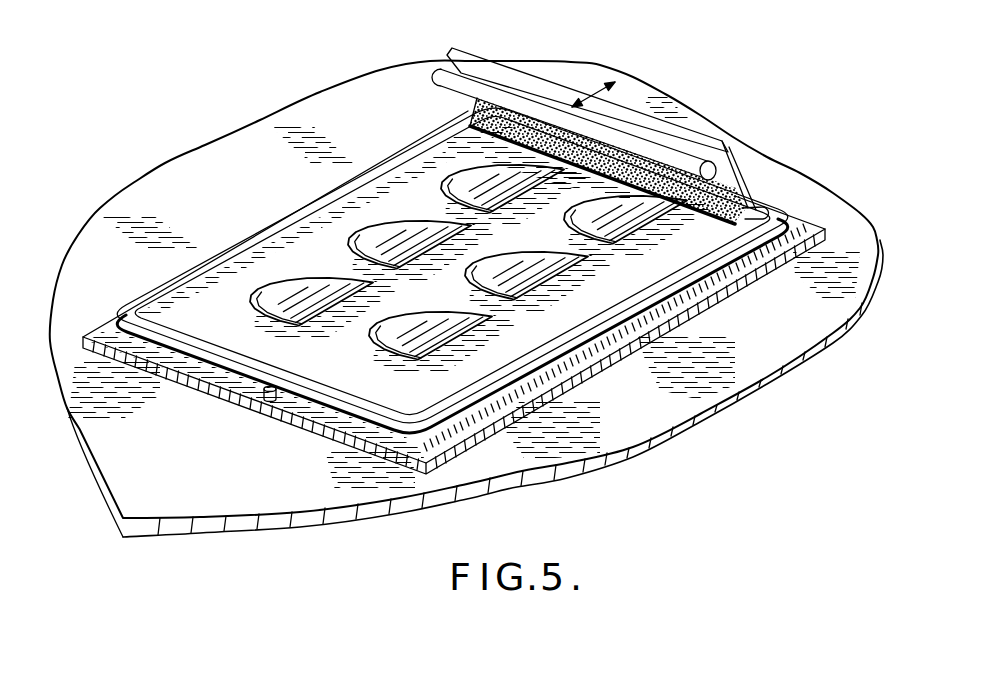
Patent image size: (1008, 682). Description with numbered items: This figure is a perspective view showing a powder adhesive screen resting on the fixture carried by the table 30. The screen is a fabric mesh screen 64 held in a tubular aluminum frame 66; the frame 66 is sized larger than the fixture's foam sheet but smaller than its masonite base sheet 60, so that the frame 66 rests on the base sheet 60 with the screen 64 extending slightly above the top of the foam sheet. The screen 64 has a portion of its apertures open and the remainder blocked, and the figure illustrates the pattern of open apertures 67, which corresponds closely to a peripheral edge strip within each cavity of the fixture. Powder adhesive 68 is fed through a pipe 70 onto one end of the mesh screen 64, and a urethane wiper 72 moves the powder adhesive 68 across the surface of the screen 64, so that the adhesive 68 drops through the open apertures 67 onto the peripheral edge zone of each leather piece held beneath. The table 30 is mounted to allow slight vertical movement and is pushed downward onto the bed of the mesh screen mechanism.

The table 30 is at (168, 500).
The masonite base sheet 60 is at (272, 406).
The mesh screen 64 is at (333, 354).
The tubular aluminum frame 66 is at (796, 216).
The open apertures 67 is at (350, 238).
The powder adhesive 68 is at (742, 172).
The pipe 70 is at (433, 78).
The urethane wiper 72 is at (487, 68).